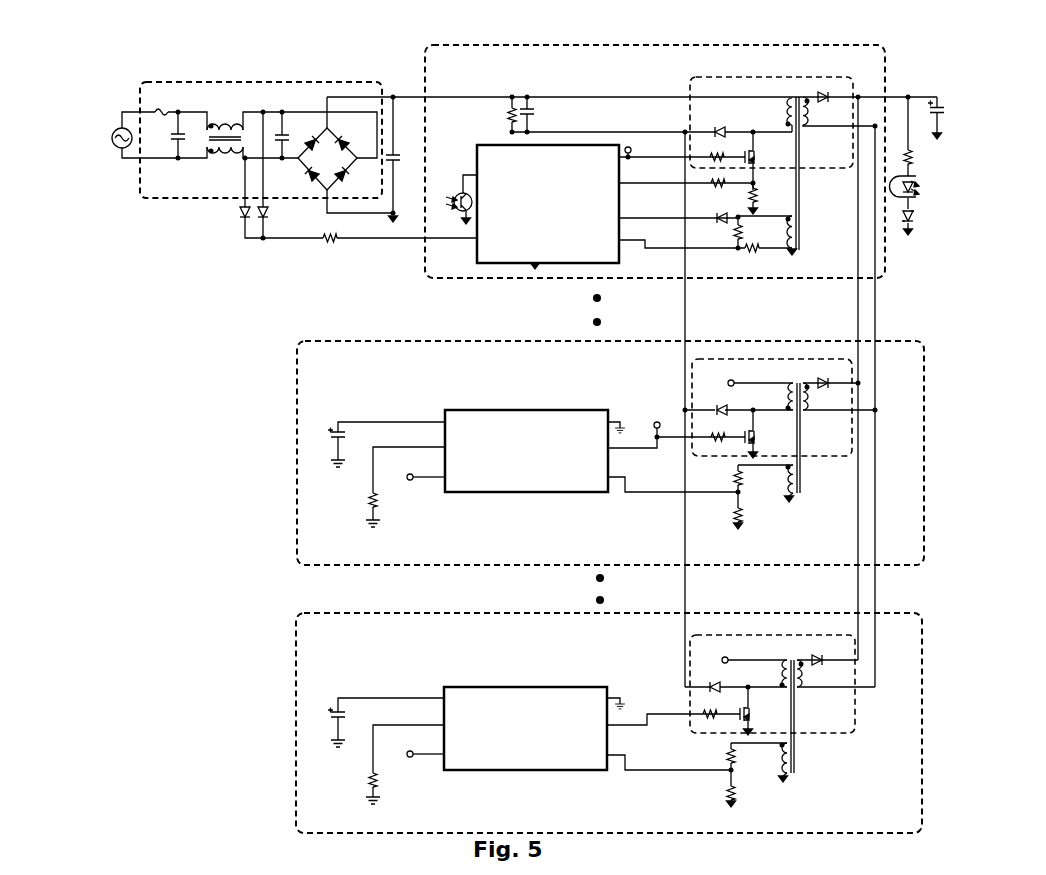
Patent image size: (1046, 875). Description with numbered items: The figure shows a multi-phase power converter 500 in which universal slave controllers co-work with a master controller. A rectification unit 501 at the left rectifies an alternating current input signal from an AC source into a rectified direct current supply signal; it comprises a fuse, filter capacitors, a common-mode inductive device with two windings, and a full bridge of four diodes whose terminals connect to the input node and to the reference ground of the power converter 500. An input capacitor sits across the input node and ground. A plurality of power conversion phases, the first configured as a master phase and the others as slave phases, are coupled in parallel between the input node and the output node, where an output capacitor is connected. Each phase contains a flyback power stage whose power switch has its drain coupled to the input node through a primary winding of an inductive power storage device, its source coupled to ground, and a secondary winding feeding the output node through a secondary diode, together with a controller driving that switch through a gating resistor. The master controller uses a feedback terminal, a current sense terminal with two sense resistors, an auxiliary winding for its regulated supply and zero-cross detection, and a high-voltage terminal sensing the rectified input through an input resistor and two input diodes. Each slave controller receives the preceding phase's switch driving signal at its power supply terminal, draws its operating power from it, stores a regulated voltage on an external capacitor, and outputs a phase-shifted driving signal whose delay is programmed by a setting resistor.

The power converter 500 is at (85, 97).
The rectification unit 501 is at (220, 82).